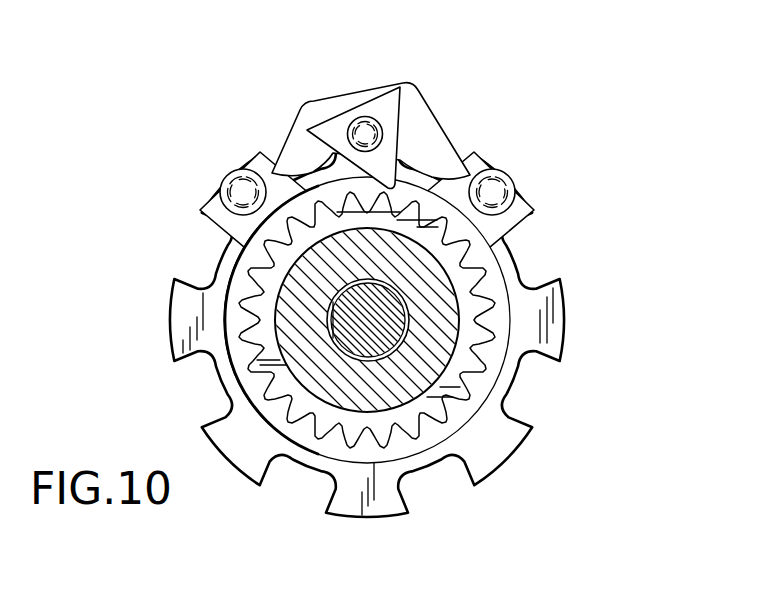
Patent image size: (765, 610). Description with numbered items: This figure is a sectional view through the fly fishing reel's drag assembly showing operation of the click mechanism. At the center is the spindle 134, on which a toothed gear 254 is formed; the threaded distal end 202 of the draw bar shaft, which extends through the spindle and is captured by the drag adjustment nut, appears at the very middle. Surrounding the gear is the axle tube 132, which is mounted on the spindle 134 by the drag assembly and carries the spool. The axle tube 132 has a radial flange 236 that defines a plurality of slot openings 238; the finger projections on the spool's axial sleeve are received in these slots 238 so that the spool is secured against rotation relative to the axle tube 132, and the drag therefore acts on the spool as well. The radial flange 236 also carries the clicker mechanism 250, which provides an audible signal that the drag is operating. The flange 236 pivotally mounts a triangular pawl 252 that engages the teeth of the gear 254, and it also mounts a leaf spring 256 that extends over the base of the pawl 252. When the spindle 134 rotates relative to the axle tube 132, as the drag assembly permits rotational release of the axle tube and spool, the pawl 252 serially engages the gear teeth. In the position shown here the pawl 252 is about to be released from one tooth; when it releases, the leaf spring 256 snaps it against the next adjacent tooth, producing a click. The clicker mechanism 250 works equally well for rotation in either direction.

The axle tube 132 is at (518, 457).
The spindle 134 is at (384, 380).
The threaded distal end 202 is at (340, 350).
The radial flange 236 is at (567, 325).
The slot openings 238 is at (548, 277).
The clicker mechanism 250 is at (283, 118).
The triangular pawl 252 is at (385, 117).
The toothed gear 254 is at (267, 278).
The leaf spring 256 is at (438, 120).